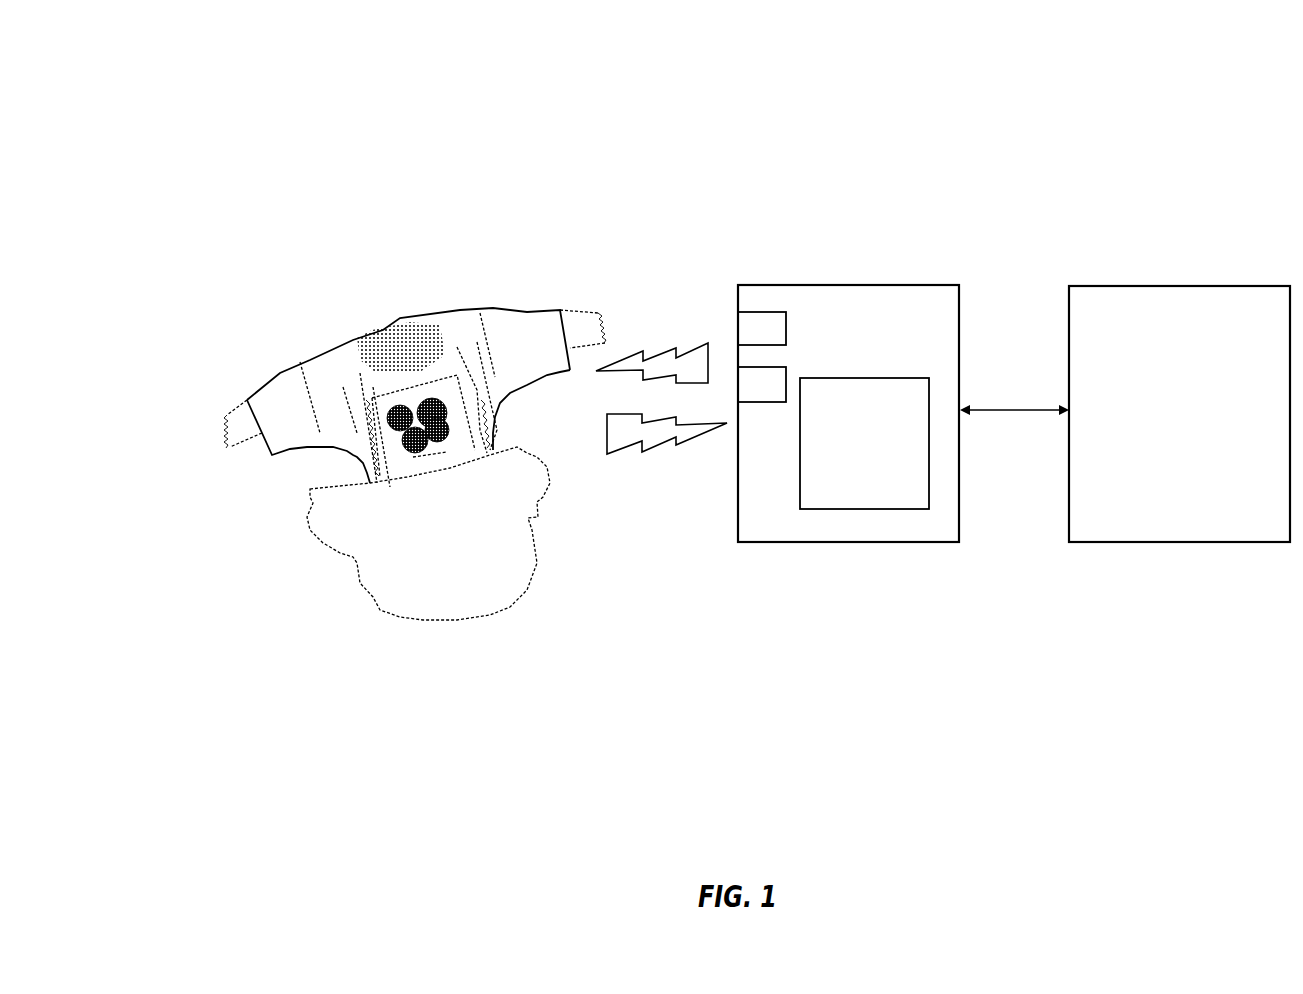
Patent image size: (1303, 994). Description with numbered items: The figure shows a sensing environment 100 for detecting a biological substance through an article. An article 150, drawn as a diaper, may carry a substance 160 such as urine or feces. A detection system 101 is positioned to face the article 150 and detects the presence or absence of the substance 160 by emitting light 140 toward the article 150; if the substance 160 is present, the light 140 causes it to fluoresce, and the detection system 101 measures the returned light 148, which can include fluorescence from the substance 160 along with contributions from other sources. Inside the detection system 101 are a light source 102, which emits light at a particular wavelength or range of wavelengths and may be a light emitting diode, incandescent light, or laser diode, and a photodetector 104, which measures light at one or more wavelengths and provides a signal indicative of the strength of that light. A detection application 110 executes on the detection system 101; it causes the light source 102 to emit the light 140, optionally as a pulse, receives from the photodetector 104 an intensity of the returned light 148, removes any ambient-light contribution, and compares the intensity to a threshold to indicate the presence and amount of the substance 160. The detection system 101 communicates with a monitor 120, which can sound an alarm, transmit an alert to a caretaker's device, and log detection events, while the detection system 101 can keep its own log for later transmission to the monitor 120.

The sensing environment 100 is at (143, 60).
The article 150 is at (406, 315).
The substance 160 is at (410, 405).
The light 140 is at (660, 333).
The returned light 148 is at (660, 467).
The detection system 101 is at (893, 340).
The light source 102 is at (775, 341).
The photodetector 104 is at (775, 398).
The detection application 110 is at (878, 480).
The monitor 120 is at (1225, 423).